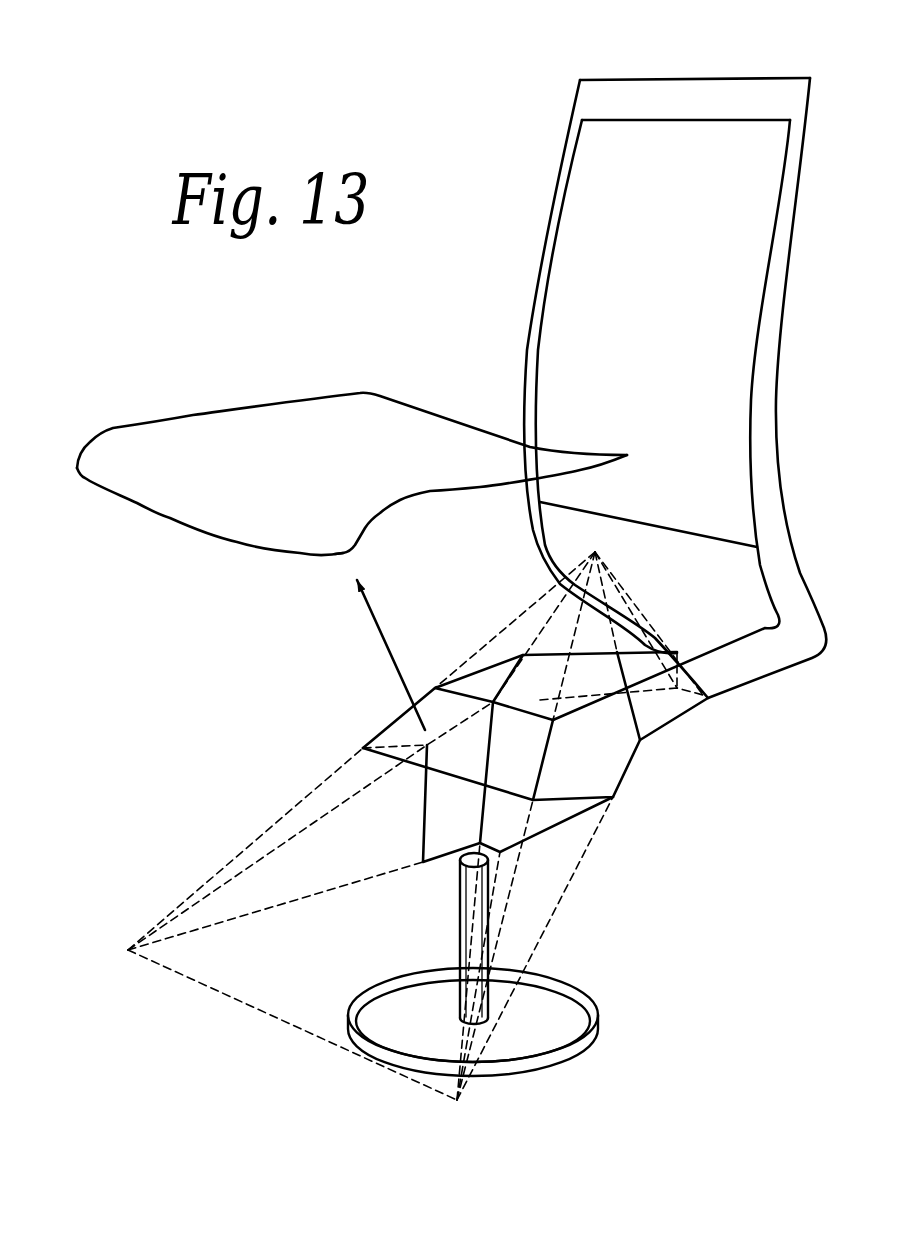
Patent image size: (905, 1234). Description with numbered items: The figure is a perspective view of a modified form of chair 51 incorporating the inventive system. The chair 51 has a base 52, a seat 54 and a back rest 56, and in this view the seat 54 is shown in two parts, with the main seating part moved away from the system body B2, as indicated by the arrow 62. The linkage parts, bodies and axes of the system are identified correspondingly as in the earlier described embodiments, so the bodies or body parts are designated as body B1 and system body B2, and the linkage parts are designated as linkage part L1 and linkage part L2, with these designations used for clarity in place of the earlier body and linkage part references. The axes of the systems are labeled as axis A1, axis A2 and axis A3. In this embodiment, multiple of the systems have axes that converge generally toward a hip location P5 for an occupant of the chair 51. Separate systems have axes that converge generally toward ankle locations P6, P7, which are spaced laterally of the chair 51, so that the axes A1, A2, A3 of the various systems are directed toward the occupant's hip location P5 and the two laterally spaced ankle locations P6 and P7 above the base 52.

The chair 51 is at (763, 66).
The back rest 56 is at (670, 228).
The seat 54 is at (212, 515).
The base 52 is at (558, 1008).
The arrow 62 is at (397, 675).
The hip location P5 is at (595, 552).
The ankle location P6 is at (296, 901).
The ankle location P7 is at (526, 961).
The axis A1 is at (652, 632).
The axis A2 is at (537, 637).
The axis A3 is at (381, 868).
The body B1 is at (243, 755).
The system body B2 is at (455, 750).
The linkage part L1 is at (550, 746).
The linkage part L2 is at (532, 716).